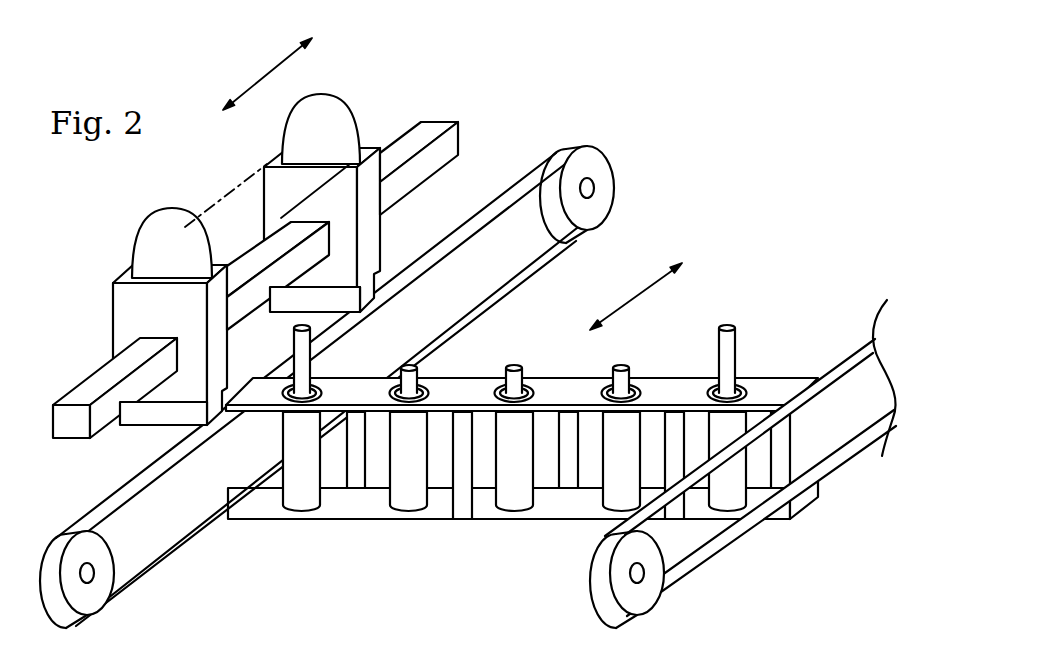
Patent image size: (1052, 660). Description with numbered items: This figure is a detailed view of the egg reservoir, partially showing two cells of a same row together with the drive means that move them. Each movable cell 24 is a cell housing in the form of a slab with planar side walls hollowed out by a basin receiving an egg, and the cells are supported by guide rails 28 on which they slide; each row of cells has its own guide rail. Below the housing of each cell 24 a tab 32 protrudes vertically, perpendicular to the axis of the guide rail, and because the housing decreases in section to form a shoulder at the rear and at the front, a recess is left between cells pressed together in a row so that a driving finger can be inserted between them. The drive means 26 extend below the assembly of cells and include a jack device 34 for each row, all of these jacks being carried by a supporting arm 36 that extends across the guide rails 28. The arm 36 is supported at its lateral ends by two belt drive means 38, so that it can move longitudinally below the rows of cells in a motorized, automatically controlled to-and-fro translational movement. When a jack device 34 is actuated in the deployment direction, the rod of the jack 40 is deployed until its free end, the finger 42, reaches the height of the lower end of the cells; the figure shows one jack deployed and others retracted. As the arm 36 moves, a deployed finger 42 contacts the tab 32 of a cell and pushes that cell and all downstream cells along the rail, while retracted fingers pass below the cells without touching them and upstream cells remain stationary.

The movable cell 24 is at (127, 300).
The drive means 26 is at (522, 437).
The guide rail 28 is at (92, 388).
The tab 32 is at (157, 415).
The jack device 34 is at (300, 498).
The supporting arm 36 is at (575, 510).
The belt drive means 38 is at (840, 362).
The rod of the jack 40 is at (727, 328).
The finger 42 is at (521, 365).